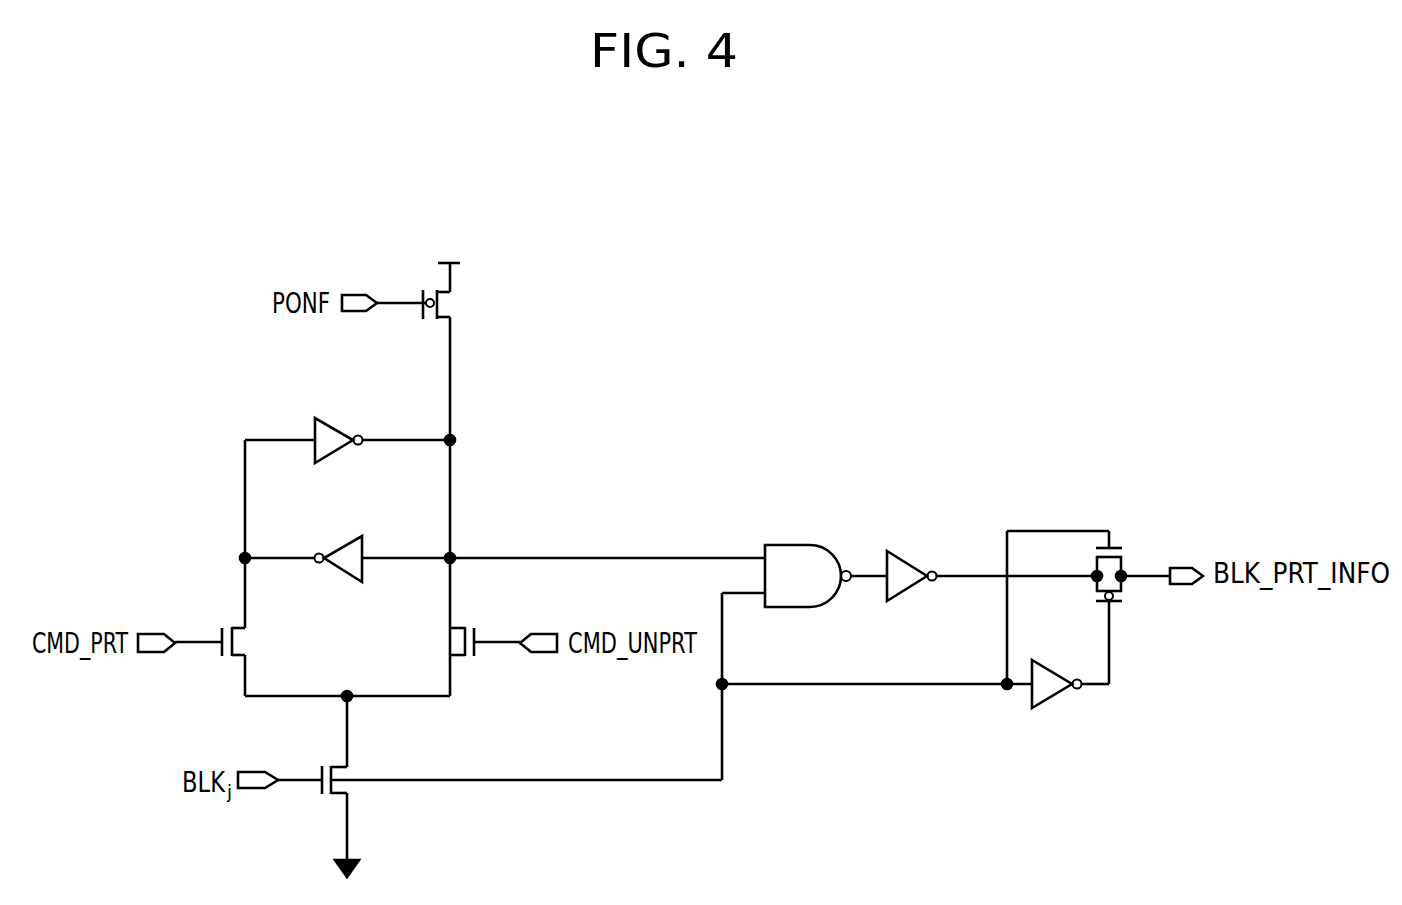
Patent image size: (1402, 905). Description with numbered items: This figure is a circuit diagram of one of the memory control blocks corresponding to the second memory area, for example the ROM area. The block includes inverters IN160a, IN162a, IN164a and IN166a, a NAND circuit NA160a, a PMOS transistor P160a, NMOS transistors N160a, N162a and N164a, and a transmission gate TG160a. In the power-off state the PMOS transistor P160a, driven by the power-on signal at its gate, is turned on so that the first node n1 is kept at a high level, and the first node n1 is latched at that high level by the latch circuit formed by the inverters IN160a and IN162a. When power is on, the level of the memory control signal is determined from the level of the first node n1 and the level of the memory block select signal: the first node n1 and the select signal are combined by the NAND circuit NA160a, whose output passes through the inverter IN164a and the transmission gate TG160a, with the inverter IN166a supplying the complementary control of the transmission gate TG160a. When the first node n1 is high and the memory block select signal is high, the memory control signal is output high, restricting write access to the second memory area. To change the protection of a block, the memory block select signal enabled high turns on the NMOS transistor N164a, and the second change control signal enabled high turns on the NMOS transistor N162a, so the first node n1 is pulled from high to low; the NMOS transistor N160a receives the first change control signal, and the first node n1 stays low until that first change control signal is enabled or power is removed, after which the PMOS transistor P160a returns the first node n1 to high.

The PMOS transistor P160a is at (474, 292).
The inverter IN160a is at (336, 421).
The inverter IN162a is at (343, 543).
The first node n1 is at (452, 440).
The NMOS transistor N160a is at (271, 643).
The NMOS transistor N162a is at (423, 643).
The NMOS transistor N164a is at (376, 778).
The NAND circuit NA160a is at (817, 543).
The inverter IN164a is at (908, 560).
The transmission gate TG160a is at (1123, 564).
The inverter IN166a is at (1052, 698).